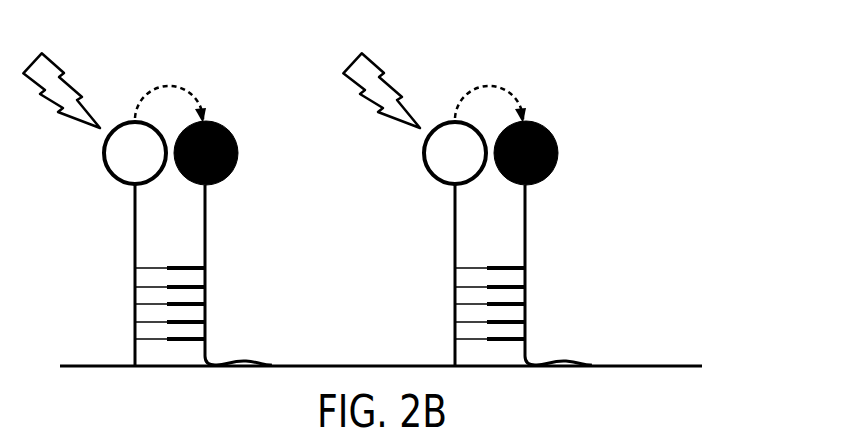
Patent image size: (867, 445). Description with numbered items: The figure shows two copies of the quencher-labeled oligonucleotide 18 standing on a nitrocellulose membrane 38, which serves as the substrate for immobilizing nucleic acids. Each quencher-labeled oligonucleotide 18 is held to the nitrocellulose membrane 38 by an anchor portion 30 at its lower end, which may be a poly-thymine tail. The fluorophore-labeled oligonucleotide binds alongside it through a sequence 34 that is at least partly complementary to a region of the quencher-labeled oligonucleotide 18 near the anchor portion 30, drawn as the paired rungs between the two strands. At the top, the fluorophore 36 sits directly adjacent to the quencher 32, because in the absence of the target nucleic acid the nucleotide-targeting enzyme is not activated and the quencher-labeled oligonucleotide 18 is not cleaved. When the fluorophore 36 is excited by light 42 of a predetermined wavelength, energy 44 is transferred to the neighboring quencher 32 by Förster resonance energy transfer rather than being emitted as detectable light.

The quencher-labeled oligonucleotide 18 is at (689, 66).
The anchor portion 30 is at (585, 310).
The quencher 32 is at (544, 127).
The sequence 34 is at (440, 313).
The fluorophore 36 is at (423, 153).
The nitrocellulose membrane 38 is at (97, 366).
The light 42 is at (347, 88).
The energy 44 is at (491, 75).